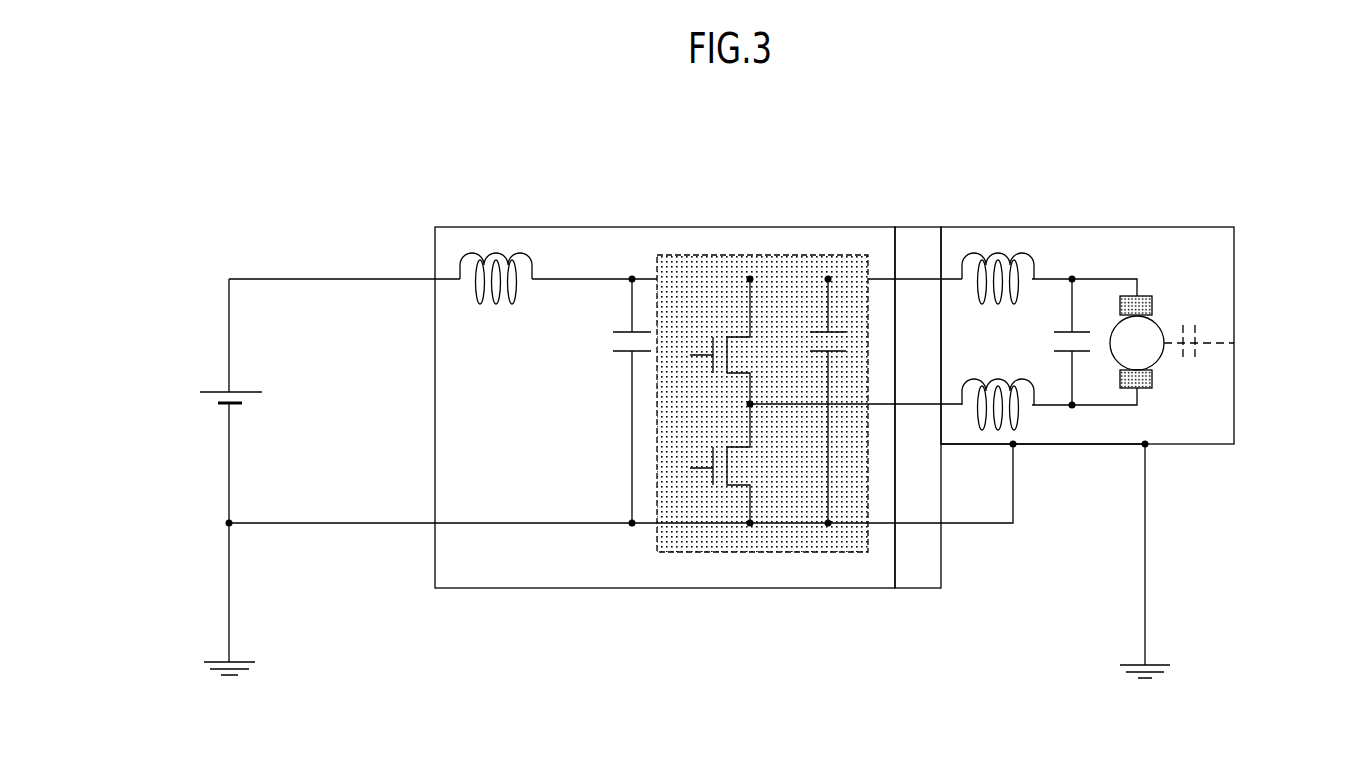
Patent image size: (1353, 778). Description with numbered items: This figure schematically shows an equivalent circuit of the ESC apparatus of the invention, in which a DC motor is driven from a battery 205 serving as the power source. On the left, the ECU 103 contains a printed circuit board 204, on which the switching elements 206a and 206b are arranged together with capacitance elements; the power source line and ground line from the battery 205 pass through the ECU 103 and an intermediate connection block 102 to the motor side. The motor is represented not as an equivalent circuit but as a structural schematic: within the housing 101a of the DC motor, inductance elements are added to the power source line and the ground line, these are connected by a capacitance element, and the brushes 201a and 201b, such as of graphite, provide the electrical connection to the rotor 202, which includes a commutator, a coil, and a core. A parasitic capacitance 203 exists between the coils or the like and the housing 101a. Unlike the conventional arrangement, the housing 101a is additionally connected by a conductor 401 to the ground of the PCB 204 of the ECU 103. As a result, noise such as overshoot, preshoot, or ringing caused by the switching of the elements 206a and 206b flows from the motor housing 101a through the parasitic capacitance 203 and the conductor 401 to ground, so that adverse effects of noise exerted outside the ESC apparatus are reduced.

The ECU 103 is at (508, 227).
The connector 102 is at (913, 228).
The housing of the DC motor 101a is at (1091, 228).
The brush 201a is at (1143, 296).
The brush 201b is at (1145, 390).
The rotor 202 is at (1155, 362).
The parasitic capacitance 203 is at (1197, 327).
The printed circuit board 204 is at (795, 255).
The battery 205 is at (203, 392).
The switching element 206a is at (731, 335).
The switching element 206b is at (733, 486).
The conductor 401 is at (985, 527).